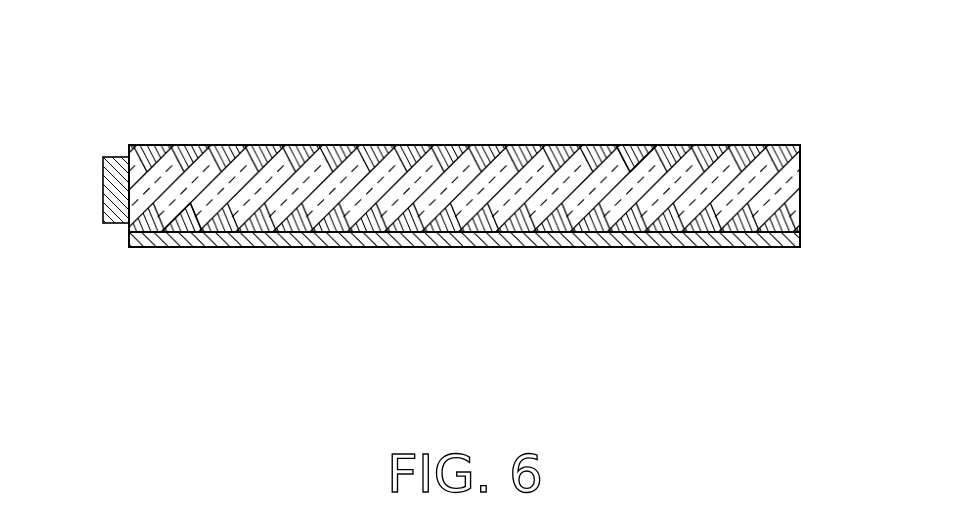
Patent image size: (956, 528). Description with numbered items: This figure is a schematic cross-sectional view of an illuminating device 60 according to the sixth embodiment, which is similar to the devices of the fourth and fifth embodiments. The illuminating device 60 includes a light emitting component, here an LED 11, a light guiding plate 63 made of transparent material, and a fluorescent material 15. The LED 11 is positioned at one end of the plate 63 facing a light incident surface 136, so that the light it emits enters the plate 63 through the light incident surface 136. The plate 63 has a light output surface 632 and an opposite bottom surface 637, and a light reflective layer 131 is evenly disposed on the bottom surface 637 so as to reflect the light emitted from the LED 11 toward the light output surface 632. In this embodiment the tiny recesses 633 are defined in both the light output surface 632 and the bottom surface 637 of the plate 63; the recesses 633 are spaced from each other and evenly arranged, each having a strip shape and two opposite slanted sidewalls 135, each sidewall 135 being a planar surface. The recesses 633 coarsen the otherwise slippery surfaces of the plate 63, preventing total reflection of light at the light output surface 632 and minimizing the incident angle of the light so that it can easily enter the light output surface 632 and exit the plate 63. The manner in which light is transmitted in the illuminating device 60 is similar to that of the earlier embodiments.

The illuminating device 60 is at (310, 127).
The light guiding plate 63 is at (773, 184).
The light output surface 632 is at (760, 146).
The recesses 633 is at (623, 147).
The fluorescent material 15 is at (628, 147).
The slanted sidewall 135 is at (643, 147).
The bottom surface 637 is at (202, 232).
The light reflective layer 131 is at (800, 237).
The light incident surface 136 is at (128, 227).
The LED 11 is at (113, 202).